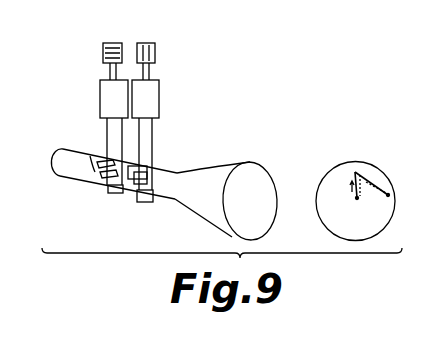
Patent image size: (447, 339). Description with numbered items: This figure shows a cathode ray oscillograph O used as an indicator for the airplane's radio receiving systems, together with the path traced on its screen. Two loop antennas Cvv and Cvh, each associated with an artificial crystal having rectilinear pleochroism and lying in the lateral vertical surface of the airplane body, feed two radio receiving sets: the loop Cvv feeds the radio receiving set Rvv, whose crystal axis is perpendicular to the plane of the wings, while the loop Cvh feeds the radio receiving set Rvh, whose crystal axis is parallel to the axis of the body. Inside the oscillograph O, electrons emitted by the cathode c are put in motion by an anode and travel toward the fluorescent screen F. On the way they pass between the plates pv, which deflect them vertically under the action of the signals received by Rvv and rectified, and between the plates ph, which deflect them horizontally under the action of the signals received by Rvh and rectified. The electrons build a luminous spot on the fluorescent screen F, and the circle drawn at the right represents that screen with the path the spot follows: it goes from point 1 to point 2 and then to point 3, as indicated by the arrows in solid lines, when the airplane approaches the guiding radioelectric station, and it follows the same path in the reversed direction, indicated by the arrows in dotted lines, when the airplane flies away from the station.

The cathode c is at (57, 158).
The cathode ray oscillograph O is at (192, 204).
The fluorescent screen F is at (267, 226).
The vertical deflection plates pv is at (90, 156).
The horizontal deflection plates ph is at (149, 168).
The loop antenna Cvv is at (103, 54).
The loop antenna Cvh is at (155, 54).
The radio receiving set Rvv is at (100, 101).
The radio receiving set Rvh is at (159, 101).
The path start point 1 is at (352, 204).
The path intermediate point 2 is at (364, 182).
The path end point 3 is at (389, 204).